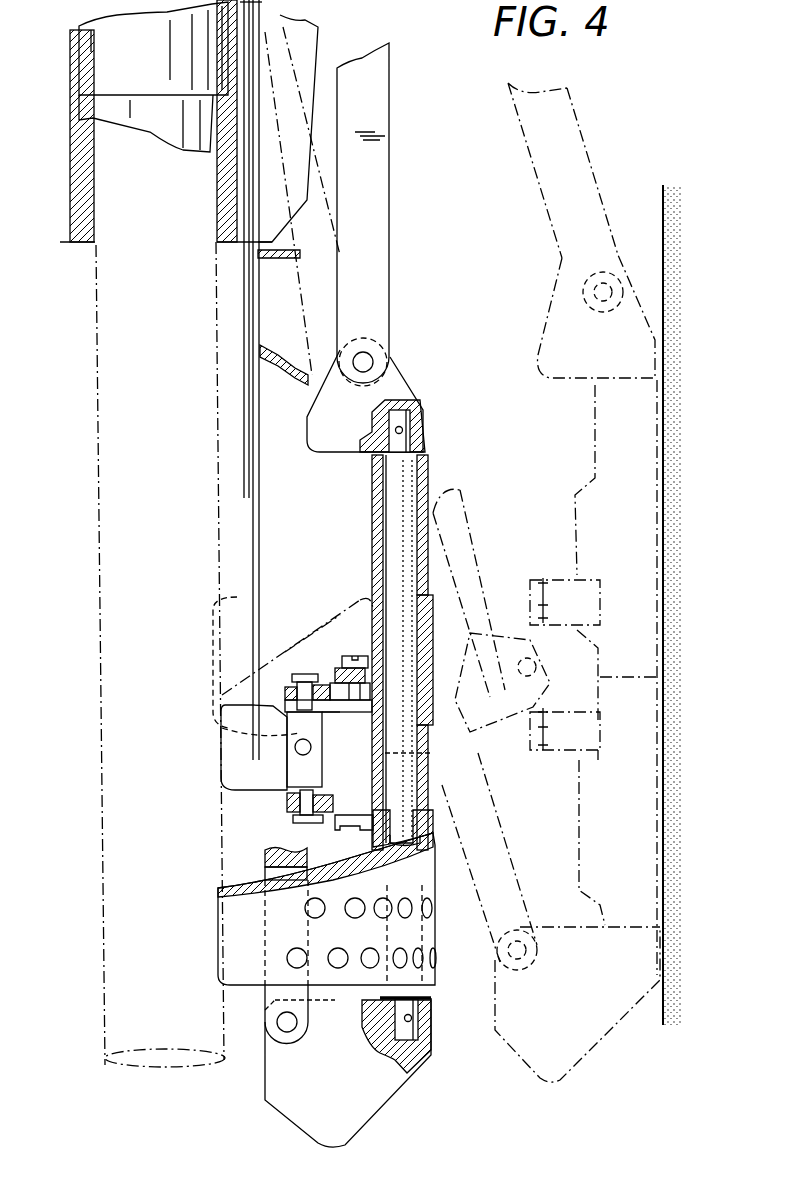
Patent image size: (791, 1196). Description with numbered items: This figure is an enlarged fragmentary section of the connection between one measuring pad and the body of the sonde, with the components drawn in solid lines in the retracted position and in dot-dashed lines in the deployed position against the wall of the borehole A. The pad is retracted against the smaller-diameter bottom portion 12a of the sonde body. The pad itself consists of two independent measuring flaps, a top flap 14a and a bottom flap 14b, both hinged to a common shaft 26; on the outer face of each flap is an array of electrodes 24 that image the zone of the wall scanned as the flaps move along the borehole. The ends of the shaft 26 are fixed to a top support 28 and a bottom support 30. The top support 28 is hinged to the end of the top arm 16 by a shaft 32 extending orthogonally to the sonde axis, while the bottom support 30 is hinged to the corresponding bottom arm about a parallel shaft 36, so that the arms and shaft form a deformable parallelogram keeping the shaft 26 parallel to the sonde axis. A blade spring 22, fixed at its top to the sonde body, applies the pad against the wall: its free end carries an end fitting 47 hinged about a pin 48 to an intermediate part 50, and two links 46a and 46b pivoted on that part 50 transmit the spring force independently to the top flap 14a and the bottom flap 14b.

The bottom portion 12a is at (95, 388).
The top flap 14a is at (238, 598).
The bottom flap 14b is at (232, 942).
The top arm 16 is at (389, 225).
The blade spring 22 is at (255, 513).
The electrodes 24 is at (290, 960).
The common shaft 26 is at (410, 525).
The top support 28 is at (393, 378).
The bottom support 30 is at (370, 1095).
The shaft 32 is at (367, 357).
The shaft 36 is at (277, 1022).
The link 46a is at (318, 674).
The link 46b is at (330, 820).
The end fitting 47 is at (233, 742).
The pin 48 is at (300, 757).
The intermediate part 50 is at (290, 787).
The borehole A is at (660, 215).